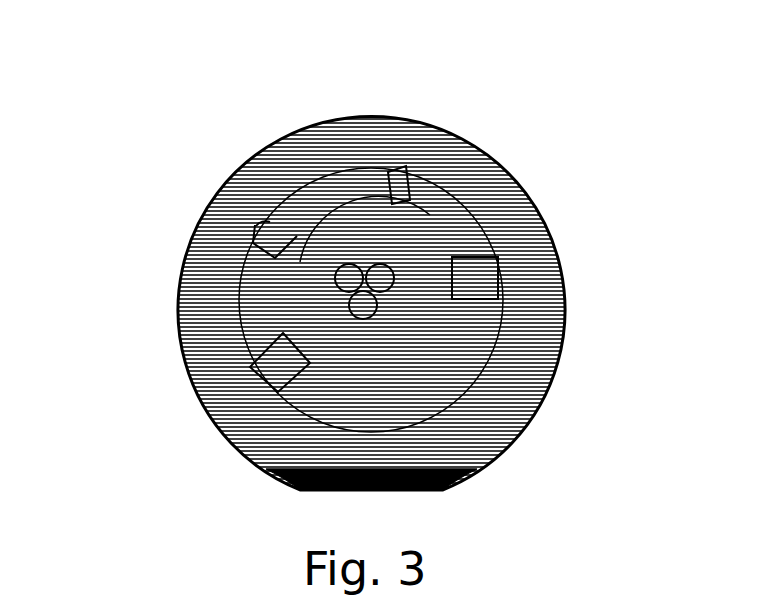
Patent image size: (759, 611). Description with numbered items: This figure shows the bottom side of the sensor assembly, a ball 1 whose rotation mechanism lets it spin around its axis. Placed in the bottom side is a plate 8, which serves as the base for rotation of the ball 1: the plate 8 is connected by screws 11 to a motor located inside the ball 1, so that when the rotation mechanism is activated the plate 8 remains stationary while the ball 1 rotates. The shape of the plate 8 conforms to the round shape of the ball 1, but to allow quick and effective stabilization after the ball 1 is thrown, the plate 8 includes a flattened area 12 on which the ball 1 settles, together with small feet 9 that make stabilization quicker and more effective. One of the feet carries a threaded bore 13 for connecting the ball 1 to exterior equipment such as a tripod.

The ball 1 is at (540, 253).
The plate 8 is at (442, 215).
The small feet 9 is at (387, 178).
The screws 11 is at (335, 274).
The flattened area 12 is at (330, 233).
The threaded bore 13 is at (248, 217).